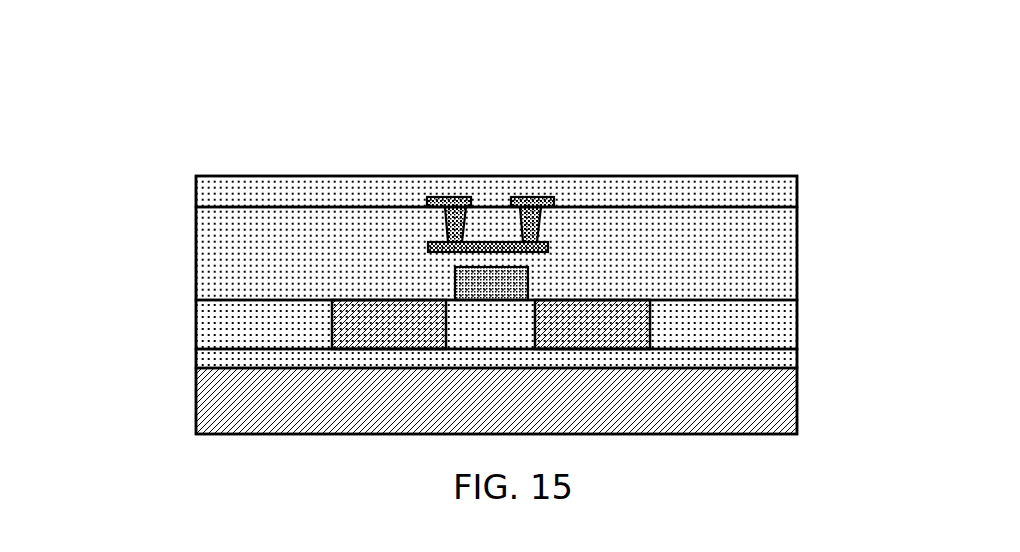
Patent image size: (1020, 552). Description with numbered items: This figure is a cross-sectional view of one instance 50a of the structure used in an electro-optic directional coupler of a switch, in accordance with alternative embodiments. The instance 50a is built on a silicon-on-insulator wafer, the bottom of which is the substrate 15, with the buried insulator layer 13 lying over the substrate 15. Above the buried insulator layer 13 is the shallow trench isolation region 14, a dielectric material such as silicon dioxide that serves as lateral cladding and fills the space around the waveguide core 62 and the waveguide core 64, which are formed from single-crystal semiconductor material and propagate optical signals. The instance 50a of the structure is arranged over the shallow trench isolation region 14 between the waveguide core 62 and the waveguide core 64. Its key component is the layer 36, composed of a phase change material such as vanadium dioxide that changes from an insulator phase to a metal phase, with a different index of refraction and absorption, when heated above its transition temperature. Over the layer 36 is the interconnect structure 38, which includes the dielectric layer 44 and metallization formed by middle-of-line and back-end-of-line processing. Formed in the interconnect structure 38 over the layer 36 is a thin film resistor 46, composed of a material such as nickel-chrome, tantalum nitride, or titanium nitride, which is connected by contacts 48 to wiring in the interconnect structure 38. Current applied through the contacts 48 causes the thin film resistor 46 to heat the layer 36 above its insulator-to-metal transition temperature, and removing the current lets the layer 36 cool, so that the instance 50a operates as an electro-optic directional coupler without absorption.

The instance of the structure 50a is at (161, 201).
The dielectric layer 44 is at (212, 240).
The shallow trench isolation region 14 is at (767, 322).
The buried insulator layer 13 is at (767, 362).
The substrate 15 is at (205, 405).
The waveguide core 62 is at (367, 314).
The waveguide core 64 is at (623, 325).
The layer 36 is at (520, 288).
The thin film resistor 46 is at (479, 247).
The contact 48 is at (530, 206).
The interconnect structure 38 is at (798, 229).